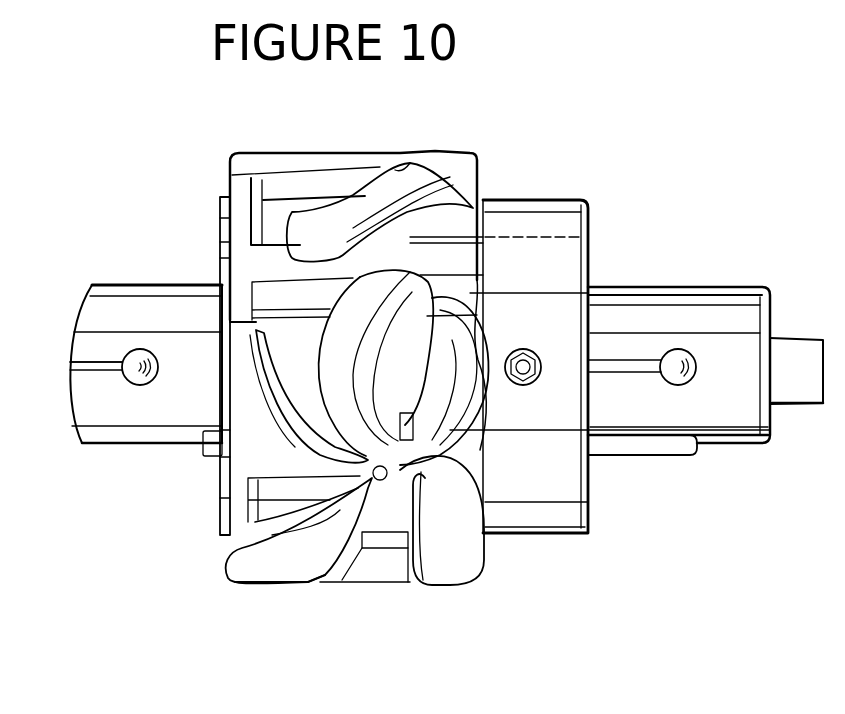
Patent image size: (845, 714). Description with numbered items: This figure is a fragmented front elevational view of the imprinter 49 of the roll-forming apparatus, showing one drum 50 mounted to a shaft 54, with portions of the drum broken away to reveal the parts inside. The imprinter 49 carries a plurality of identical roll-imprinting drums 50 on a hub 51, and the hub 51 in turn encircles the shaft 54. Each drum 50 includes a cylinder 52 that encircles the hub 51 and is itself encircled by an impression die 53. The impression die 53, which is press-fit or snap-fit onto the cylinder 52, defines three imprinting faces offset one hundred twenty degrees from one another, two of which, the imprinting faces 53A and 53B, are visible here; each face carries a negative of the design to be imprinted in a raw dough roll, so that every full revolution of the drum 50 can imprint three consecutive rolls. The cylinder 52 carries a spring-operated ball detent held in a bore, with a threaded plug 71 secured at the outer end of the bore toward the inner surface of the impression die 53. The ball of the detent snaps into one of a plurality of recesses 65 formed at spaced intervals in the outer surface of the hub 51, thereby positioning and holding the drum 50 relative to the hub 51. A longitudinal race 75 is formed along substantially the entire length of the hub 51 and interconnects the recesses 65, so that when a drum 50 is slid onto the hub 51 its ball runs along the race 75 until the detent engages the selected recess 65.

The imprinter 49 is at (74, 432).
The drum 50 is at (458, 153).
The hub 51 is at (674, 287).
The cylinder 52 is at (578, 518).
The impression die 53 is at (485, 183).
The imprinting face 53A is at (374, 480).
The imprinting face 53B is at (374, 170).
The shaft 54 is at (790, 396).
The recess 65 is at (143, 350).
The threaded plug 71 is at (532, 352).
The longitudinal race 75 is at (93, 366).